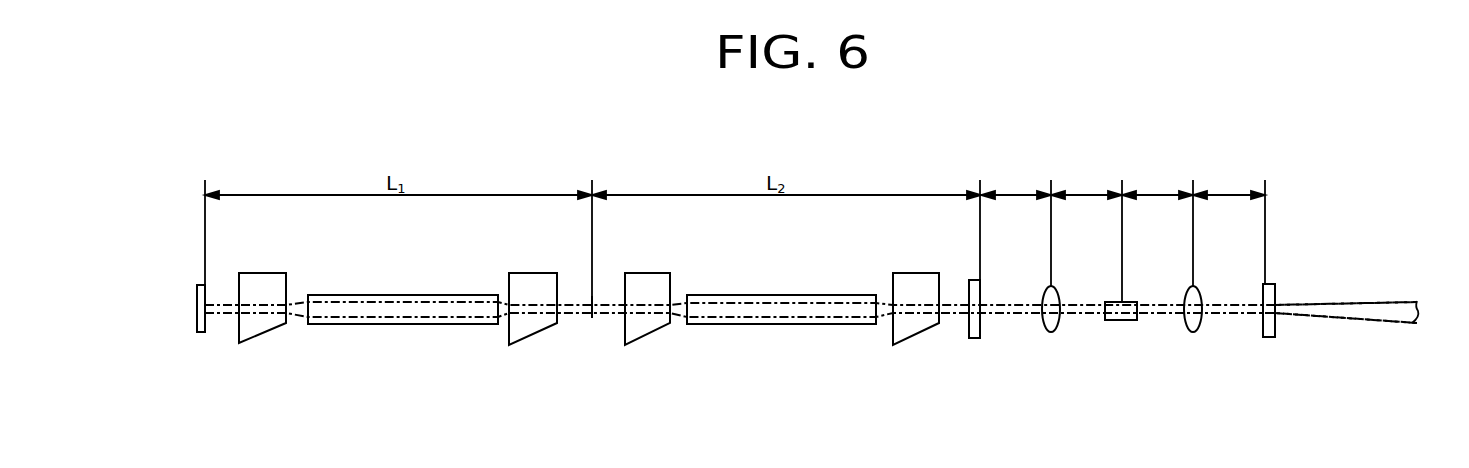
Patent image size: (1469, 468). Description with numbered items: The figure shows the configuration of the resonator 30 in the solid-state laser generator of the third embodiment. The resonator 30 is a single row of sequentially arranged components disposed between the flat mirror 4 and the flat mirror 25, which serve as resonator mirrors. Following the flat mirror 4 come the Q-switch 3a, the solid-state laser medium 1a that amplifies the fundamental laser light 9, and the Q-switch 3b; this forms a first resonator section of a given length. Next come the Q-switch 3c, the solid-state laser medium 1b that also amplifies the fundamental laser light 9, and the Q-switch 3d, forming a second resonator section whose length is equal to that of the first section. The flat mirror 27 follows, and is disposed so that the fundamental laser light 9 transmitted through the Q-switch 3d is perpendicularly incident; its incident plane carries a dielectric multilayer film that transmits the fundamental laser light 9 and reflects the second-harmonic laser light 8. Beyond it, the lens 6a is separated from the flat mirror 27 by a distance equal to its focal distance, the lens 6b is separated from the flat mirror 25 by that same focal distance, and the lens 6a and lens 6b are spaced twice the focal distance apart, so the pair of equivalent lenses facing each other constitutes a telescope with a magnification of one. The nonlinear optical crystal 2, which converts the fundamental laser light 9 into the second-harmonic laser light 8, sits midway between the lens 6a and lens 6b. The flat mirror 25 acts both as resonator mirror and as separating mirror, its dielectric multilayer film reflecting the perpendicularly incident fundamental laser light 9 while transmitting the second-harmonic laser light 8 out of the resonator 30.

The flat mirror 4 is at (199, 334).
The Q-switch 3a is at (255, 273).
The solid-state laser medium 1a is at (373, 325).
The Q-switch 3b is at (529, 273).
The fundamental laser light 9 is at (589, 310).
The Q-switch 3c is at (643, 273).
The solid-state laser medium 1b is at (797, 325).
The Q-switch 3d is at (911, 273).
The flat mirror 27 is at (972, 344).
The resonator 30 is at (1202, 136).
The lens 6a is at (1051, 335).
The nonlinear optical crystal 2 is at (1122, 322).
The lens 6b is at (1193, 335).
The flat mirror 25 is at (1268, 340).
The second-harmonic laser light 8 is at (1336, 320).